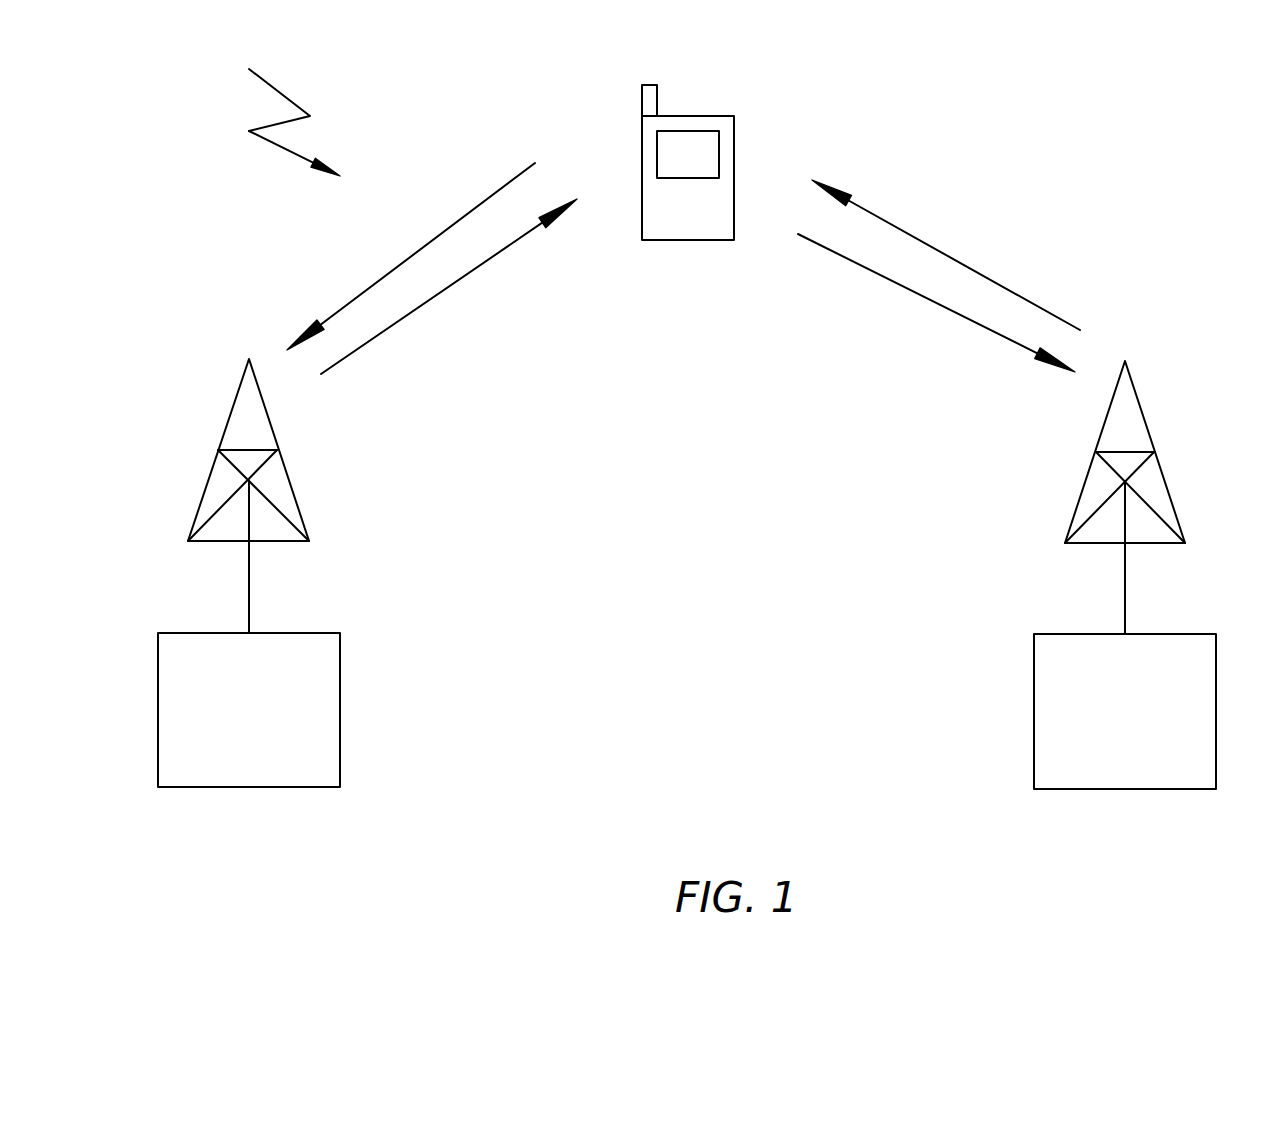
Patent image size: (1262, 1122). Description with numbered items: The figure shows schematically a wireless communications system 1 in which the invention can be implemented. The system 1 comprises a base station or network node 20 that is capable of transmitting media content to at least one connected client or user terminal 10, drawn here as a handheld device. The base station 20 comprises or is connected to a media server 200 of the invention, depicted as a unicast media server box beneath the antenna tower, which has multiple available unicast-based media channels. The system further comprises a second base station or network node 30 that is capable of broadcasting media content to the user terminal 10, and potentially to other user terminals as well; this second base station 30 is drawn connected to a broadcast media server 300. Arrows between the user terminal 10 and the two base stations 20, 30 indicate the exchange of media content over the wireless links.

The wireless communications system 1 is at (279, 101).
The user terminal 10 is at (734, 208).
The base station 20 is at (294, 496).
The second base station 30 is at (1170, 513).
The media server 200 is at (304, 765).
The broadcast media server 300 is at (1179, 767).